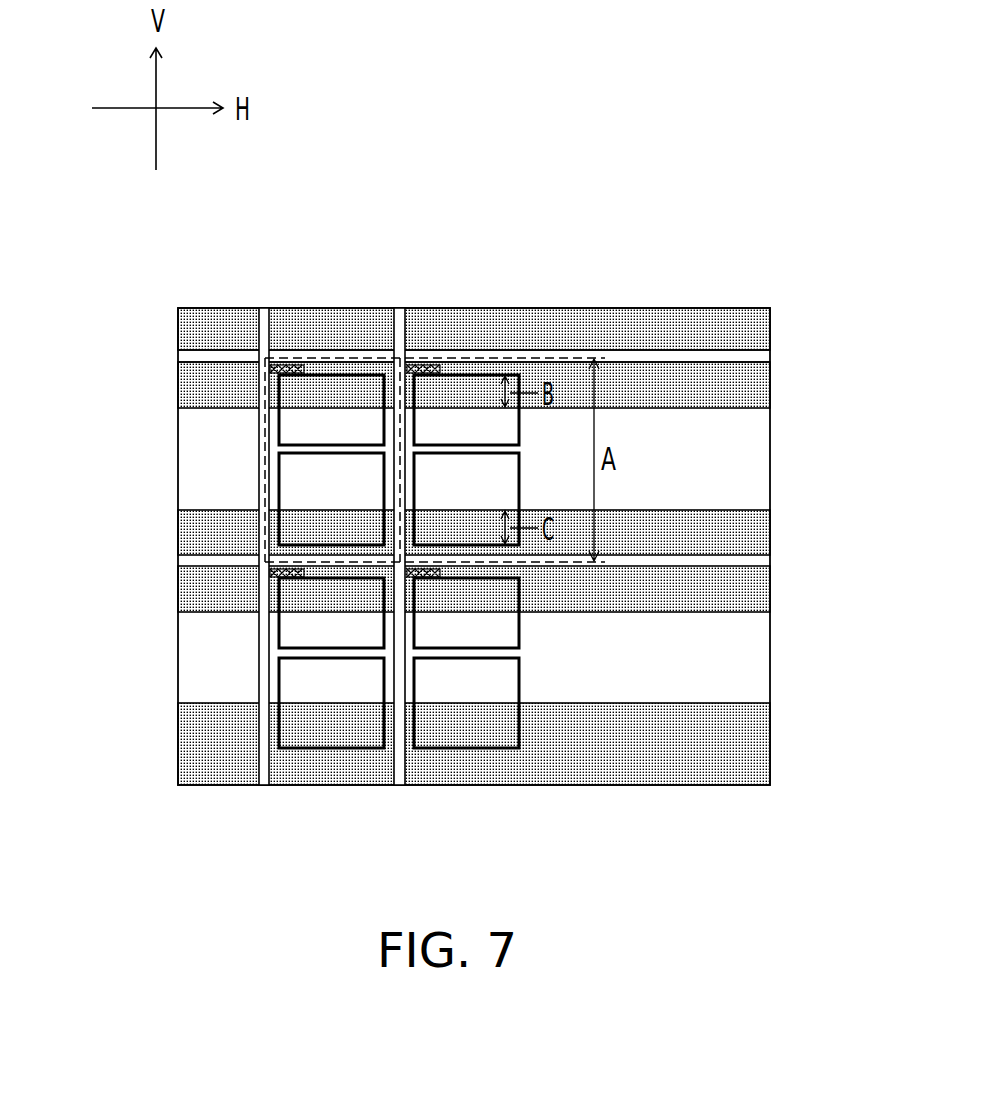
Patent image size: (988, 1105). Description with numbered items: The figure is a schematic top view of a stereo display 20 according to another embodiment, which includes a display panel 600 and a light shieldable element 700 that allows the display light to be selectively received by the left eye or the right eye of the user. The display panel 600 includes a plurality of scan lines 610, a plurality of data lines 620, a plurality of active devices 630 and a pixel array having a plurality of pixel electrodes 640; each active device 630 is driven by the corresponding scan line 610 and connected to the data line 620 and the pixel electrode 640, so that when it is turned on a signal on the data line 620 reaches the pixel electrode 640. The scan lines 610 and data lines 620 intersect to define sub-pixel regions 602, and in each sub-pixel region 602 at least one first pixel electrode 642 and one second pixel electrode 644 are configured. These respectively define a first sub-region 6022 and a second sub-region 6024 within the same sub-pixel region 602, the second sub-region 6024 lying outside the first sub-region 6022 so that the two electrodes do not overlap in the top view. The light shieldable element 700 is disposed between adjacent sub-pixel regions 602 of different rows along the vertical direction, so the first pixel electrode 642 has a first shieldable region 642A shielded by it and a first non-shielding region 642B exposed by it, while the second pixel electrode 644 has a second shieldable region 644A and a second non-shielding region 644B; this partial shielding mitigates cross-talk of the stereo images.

The stereo display 20 is at (801, 853).
The display panel 600 is at (738, 463).
The sub-pixel region 602 is at (262, 484).
The first sub-region 6022 is at (420, 322).
The second sub-region 6024 is at (203, 525).
The scan line 610 is at (194, 358).
The data line 620 is at (258, 322).
The active device 630 is at (285, 367).
The pixel electrode 640 is at (292, 399).
The first pixel electrode 642 is at (333, 322).
The first shieldable region 642A is at (375, 397).
The first non-shielding region 642B is at (375, 433).
The second pixel electrode 644 is at (203, 505).
The second shieldable region 644A is at (298, 525).
The second non-shielding region 644B is at (307, 487).
The light shieldable element 700 is at (786, 308).